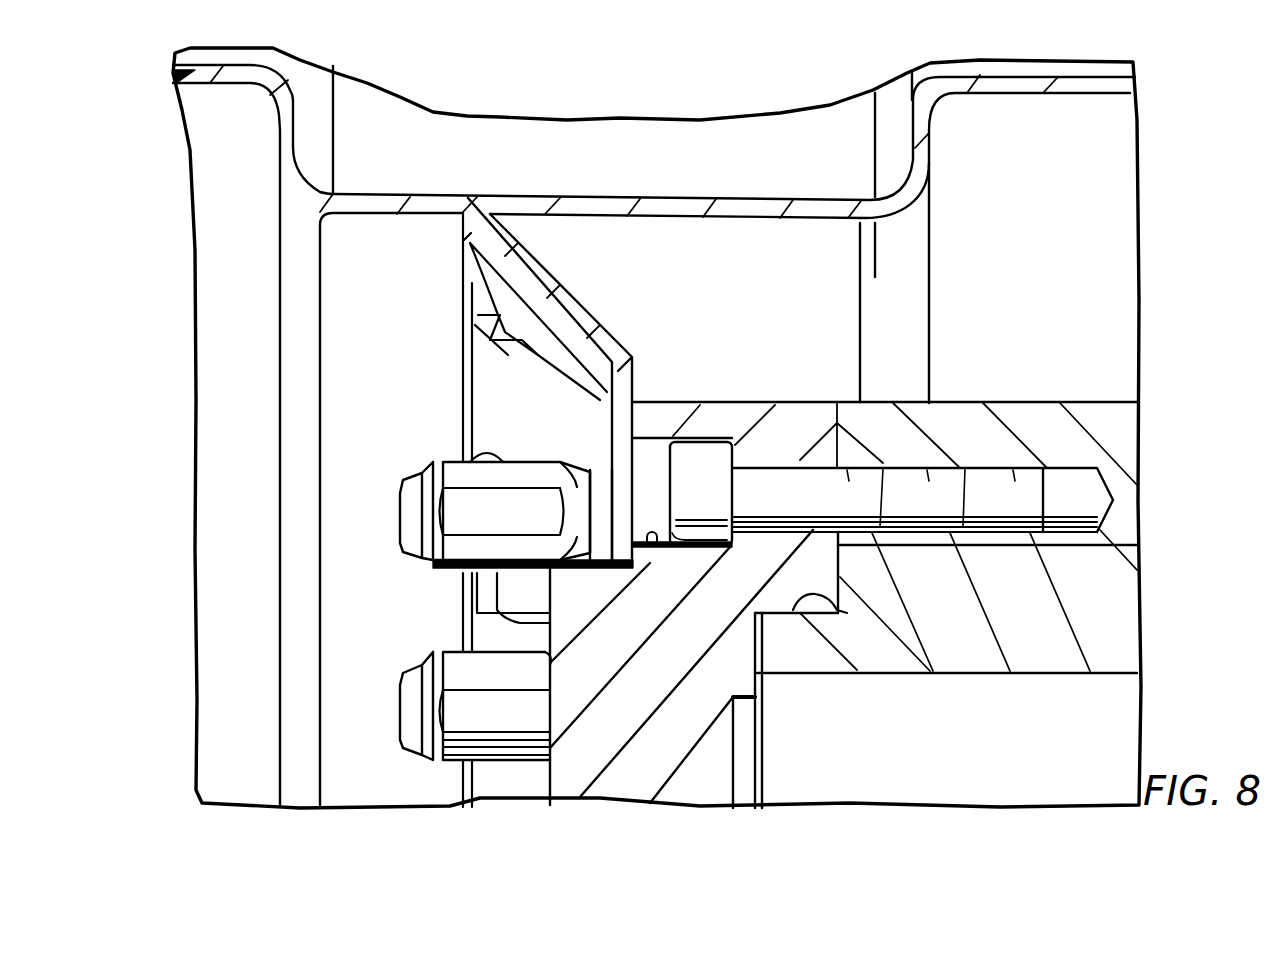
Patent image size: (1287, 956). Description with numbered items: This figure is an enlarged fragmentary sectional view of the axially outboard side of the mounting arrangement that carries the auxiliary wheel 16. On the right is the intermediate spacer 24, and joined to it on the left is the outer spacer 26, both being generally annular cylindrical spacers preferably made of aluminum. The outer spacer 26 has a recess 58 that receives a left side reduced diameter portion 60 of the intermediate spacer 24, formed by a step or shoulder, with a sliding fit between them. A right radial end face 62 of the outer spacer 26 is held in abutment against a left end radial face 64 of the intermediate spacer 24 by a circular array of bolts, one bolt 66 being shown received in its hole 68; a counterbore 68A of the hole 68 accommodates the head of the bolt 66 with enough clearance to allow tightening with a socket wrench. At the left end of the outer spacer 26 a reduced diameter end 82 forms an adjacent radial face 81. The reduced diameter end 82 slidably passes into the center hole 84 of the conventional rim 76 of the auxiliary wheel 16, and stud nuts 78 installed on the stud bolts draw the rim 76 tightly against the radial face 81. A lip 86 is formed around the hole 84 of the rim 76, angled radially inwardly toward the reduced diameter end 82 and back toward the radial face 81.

The auxiliary wheel 16 is at (172, 72).
The intermediate spacer 24 is at (967, 418).
The outer spacer 26 is at (680, 392).
The recess 58 is at (779, 613).
The reduced diameter portion 60 is at (847, 613).
The right radial end face 62 is at (870, 533).
The left end radial face 64 is at (840, 568).
The bolt 66 is at (786, 482).
The hole 68 is at (750, 470).
The counterbore 68A is at (650, 540).
The rim 76 is at (563, 292).
The stud nut 78 is at (450, 472).
The radial face 81 is at (600, 425).
The reduced diameter end 82 is at (470, 573).
The center hole 84 is at (612, 566).
The lip 86 is at (613, 560).